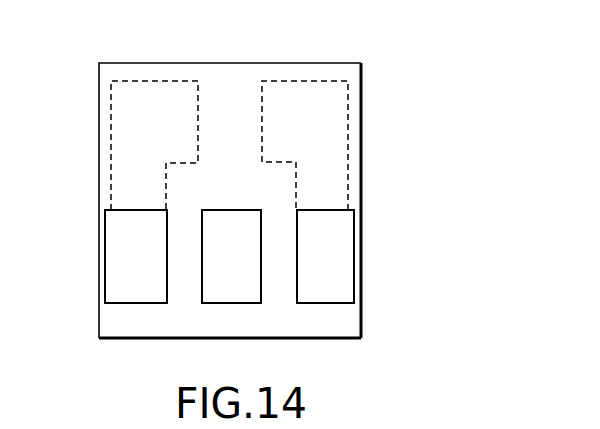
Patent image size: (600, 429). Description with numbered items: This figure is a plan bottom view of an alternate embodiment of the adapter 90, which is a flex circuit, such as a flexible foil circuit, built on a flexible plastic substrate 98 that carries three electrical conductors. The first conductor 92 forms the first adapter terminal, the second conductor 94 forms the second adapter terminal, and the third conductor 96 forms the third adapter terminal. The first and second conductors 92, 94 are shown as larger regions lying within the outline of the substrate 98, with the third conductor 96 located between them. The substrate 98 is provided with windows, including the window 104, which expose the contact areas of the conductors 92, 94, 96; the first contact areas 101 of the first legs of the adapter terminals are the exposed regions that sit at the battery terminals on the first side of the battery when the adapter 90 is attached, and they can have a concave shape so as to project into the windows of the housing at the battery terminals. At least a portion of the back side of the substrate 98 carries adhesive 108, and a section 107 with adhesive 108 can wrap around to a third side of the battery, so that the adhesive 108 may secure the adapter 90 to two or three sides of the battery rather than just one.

The adapter 90 is at (399, 31).
The first conductor 92 is at (317, 93).
The second conductor 94 is at (130, 132).
The third conductor 96 is at (218, 290).
The flexible plastic substrate 98 is at (363, 190).
The first contact areas 101 is at (213, 245).
The window 104 is at (255, 303).
The section 107 is at (212, 333).
The adhesive 108 is at (220, 147).